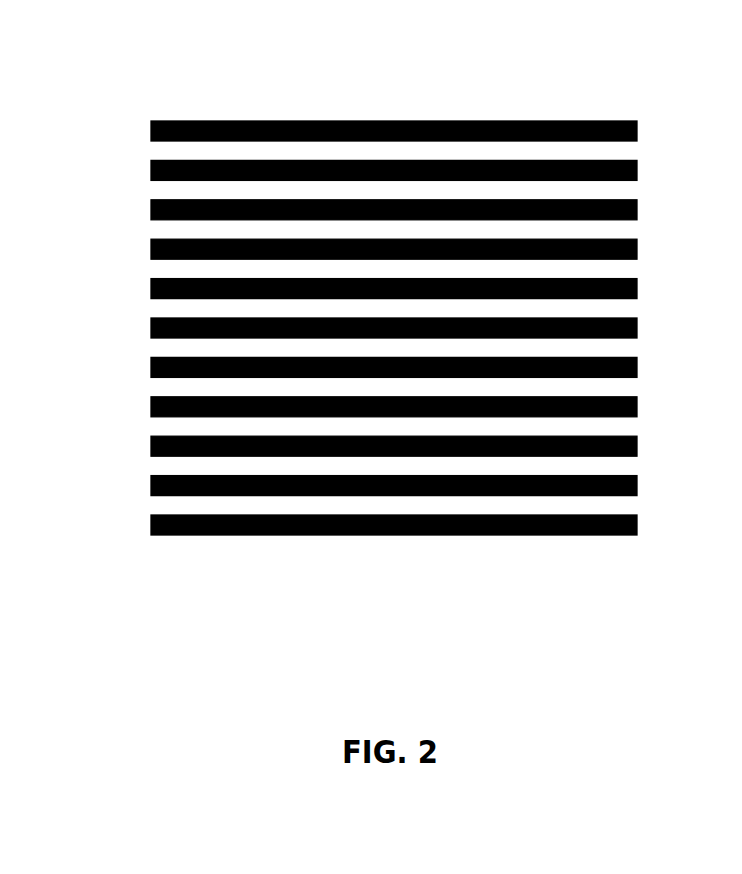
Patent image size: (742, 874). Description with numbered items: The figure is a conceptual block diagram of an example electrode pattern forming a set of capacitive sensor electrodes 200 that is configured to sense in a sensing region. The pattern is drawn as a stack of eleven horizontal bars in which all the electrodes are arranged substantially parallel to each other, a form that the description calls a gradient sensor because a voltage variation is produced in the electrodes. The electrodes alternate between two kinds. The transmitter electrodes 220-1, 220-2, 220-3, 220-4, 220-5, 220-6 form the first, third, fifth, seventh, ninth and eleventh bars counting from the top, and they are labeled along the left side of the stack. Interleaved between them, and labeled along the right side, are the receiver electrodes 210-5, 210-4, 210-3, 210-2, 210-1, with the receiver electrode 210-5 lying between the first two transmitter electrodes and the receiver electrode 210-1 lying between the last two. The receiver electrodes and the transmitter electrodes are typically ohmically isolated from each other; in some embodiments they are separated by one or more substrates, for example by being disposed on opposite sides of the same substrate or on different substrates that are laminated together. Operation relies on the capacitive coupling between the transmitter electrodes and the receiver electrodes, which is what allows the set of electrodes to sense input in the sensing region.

The set of capacitive sensor electrodes 200 is at (322, 18).
The transmitter electrode 220-1 is at (150, 135).
The transmitter electrode 220-2 is at (150, 214).
The transmitter electrode 220-3 is at (150, 293).
The transmitter electrode 220-4 is at (150, 372).
The transmitter electrode 220-5 is at (150, 451).
The transmitter electrode 220-6 is at (150, 530).
The receiver electrode 210-1 is at (637, 486).
The receiver electrode 210-2 is at (637, 407).
The receiver electrode 210-3 is at (637, 328).
The receiver electrode 210-4 is at (637, 249).
The receiver electrode 210-5 is at (637, 170).